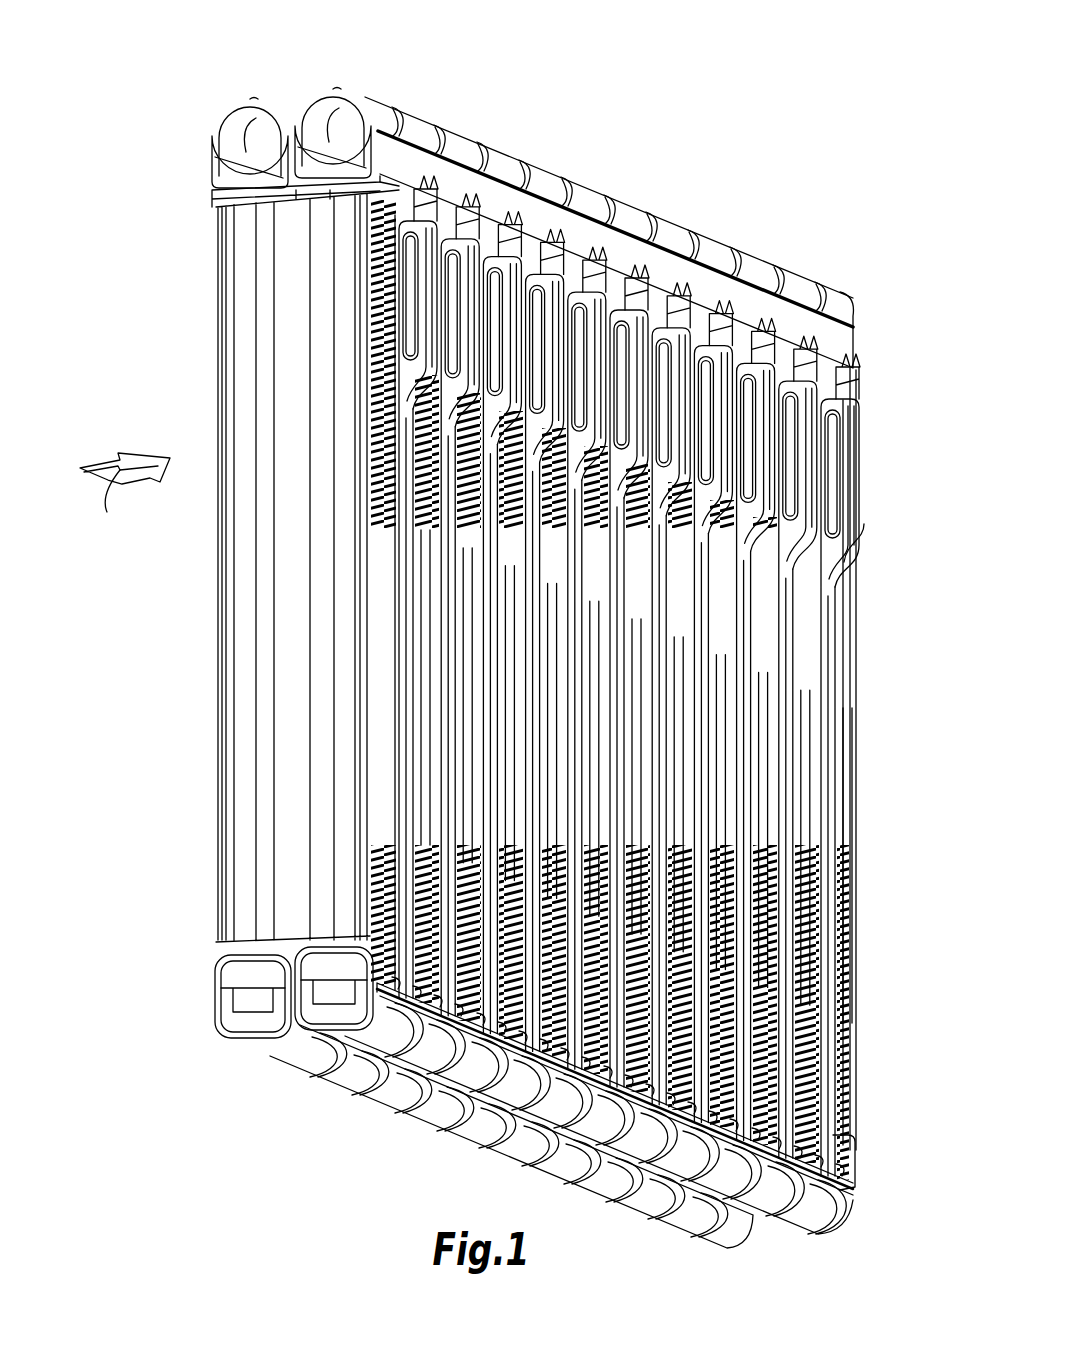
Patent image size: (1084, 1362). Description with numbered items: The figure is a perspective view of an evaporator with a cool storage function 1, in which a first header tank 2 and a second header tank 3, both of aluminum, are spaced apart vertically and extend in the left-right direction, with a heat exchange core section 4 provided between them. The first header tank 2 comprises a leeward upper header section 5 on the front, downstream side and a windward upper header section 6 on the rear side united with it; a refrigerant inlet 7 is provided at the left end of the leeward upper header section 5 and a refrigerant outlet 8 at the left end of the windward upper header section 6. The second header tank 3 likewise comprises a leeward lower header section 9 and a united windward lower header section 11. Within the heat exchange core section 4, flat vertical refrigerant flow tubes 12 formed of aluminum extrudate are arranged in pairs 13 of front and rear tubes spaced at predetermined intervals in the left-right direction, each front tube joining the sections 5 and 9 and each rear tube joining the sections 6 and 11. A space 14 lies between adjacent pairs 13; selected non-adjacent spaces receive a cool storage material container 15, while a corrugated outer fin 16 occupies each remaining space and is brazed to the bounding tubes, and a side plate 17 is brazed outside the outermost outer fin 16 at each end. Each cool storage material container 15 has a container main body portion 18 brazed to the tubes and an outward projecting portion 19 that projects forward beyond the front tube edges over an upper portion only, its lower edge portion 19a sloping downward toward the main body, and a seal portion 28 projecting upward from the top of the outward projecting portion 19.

The evaporator with a cool storage function 1 is at (804, 134).
The first header tank 2 is at (595, 120).
The second header tank 3 is at (356, 1141).
The heat exchange core section 4 is at (862, 773).
The leeward upper header section 5 is at (648, 212).
The windward upper header section 6 is at (292, 102).
The refrigerant inlet 7 is at (330, 95).
The refrigerant outlet 8 is at (238, 112).
The leeward lower header section 9 is at (507, 1090).
The windward lower header section 11 is at (300, 1062).
The refrigerant flow tube 12 is at (232, 195).
The pair 13 is at (232, 947).
The space 14 is at (415, 800).
The cool storage material container 15 is at (830, 607).
The corrugated outer fin 16 is at (815, 835).
The side plate 17 is at (240, 740).
The container main body portion 18 is at (450, 630).
The outward projecting portion 19 is at (590, 250).
The lower edge portion 19a is at (855, 550).
The seal portion 28 is at (850, 365).